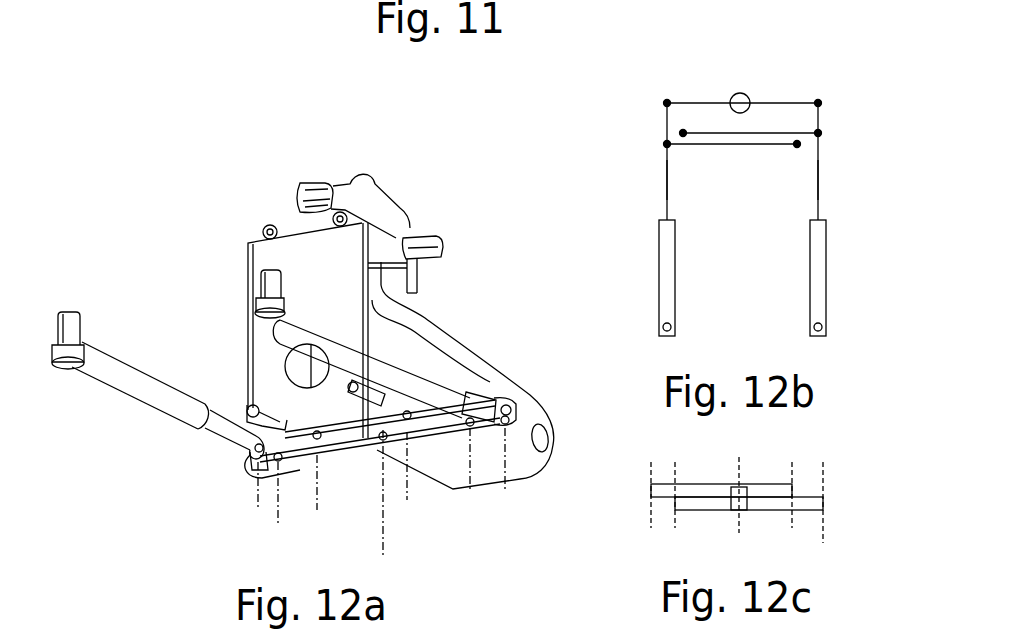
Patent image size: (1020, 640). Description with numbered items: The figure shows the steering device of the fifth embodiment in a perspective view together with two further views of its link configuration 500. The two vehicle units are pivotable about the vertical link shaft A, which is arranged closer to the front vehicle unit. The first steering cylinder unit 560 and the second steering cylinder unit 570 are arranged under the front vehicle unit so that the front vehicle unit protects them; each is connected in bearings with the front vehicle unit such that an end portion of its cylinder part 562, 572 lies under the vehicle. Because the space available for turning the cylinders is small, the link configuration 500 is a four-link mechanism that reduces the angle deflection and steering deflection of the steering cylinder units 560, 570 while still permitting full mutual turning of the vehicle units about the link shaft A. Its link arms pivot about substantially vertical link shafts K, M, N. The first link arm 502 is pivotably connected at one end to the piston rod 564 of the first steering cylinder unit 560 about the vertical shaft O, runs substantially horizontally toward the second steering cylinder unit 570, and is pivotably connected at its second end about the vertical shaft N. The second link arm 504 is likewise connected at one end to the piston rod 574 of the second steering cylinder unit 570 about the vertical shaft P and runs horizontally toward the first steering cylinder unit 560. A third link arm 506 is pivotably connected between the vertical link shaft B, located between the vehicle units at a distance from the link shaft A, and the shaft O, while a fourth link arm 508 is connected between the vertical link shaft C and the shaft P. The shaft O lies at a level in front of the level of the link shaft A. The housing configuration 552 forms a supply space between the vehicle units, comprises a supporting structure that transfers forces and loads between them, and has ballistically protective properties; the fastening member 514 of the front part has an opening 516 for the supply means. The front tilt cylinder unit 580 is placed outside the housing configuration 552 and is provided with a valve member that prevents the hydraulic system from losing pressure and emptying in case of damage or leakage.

In FIG. 12A, the link configuration 500 is at (333, 456).
In FIG. 12B, the link configuration 500 is at (727, 122).
In FIG. 12C, the link configuration 500 is at (670, 450).
In FIG. 12B, the first link arm 502 is at (733, 147).
In FIG. 12C, the first link arm 502 is at (770, 483).
In FIG. 12B, the second link arm 504 is at (808, 136).
In FIG. 12C, the second link arm 504 is at (763, 512).
In FIG. 12B, the third link arm 506 is at (665, 125).
In FIG. 12B, the fourth link arm 508 is at (820, 107).
In FIG. 12A, the fastening member 514 is at (253, 273).
In FIG. 12A, the opening 516 is at (293, 357).
In FIG. 12A, the housing configuration 552 is at (505, 373).
In FIG. 12A, the first steering cylinder unit 560 is at (140, 408).
In FIG. 12B, the first steering cylinder unit 560 is at (652, 282).
In FIG. 12A, the cylinder part 562 is at (180, 422).
In FIG. 12B, the cylinder part 562 is at (659, 237).
In FIG. 12B, the piston rod 564 is at (667, 186).
In FIG. 12A, the second steering cylinder unit 570 is at (406, 372).
In FIG. 12B, the second steering cylinder unit 570 is at (803, 273).
In FIG. 12A, the cylinder part 572 is at (306, 318).
In FIG. 12B, the cylinder part 572 is at (810, 318).
In FIG. 12B, the piston rod 574 is at (818, 187).
In FIG. 12A, the front tilt cylinder unit 580 is at (377, 210).
In FIG. 12A, the vertical link shaft A is at (383, 535).
In FIG. 12B, the vertical link shaft A is at (736, 94).
In FIG. 12C, the vertical link shaft A is at (738, 483).
In FIG. 12A, the vertical link shaft B is at (258, 485).
In FIG. 12B, the vertical link shaft B is at (667, 101).
In FIG. 12A, the vertical link shaft C is at (505, 455).
In FIG. 12B, the vertical link shaft C is at (818, 102).
In FIG. 12A, the vertical link shaft K is at (278, 518).
In FIG. 12A, the vertical link shaft M is at (317, 498).
In FIG. 12B, the vertical link shaft M is at (684, 137).
In FIG. 12C, the vertical link shaft M is at (676, 510).
In FIG. 12A, the vertical shaft N is at (407, 490).
In FIG. 12B, the vertical shaft N is at (797, 146).
In FIG. 12C, the vertical shaft N is at (793, 482).
In FIG. 12B, the vertical shaft O is at (667, 144).
In FIG. 12C, the vertical shaft O is at (650, 484).
In FIG. 12A, the vertical shaft P is at (472, 472).
In FIG. 12B, the vertical shaft P is at (820, 135).
In FIG. 12C, the vertical shaft P is at (823, 482).